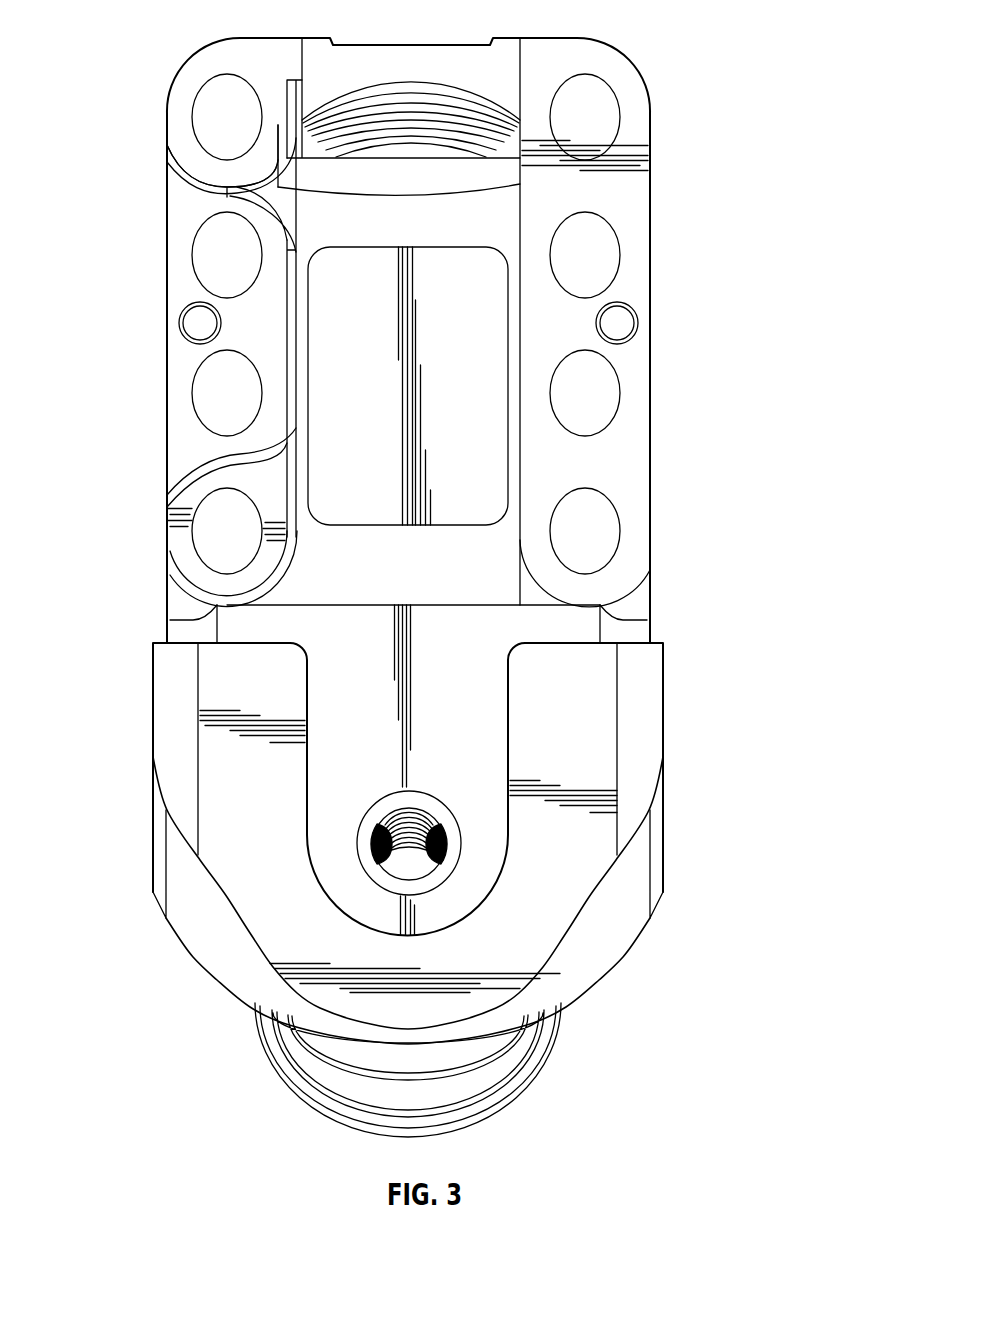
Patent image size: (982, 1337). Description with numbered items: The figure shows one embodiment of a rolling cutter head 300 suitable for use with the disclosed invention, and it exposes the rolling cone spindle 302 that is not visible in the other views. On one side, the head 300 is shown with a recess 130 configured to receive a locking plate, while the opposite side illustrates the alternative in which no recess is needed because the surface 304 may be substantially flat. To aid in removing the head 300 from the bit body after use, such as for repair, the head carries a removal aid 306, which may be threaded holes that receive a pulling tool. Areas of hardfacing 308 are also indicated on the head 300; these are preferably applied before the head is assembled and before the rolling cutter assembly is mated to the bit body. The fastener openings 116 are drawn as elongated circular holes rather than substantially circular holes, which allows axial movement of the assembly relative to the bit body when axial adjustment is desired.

The rolling cutter head 300 is at (728, 58).
The recess 130 is at (178, 173).
The fastener openings 116 is at (622, 258).
The removal aid 306 is at (638, 322).
The surface 304 is at (600, 468).
The areas of hardfacing 308 is at (400, 287).
The rolling cone spindle 302 is at (476, 1082).